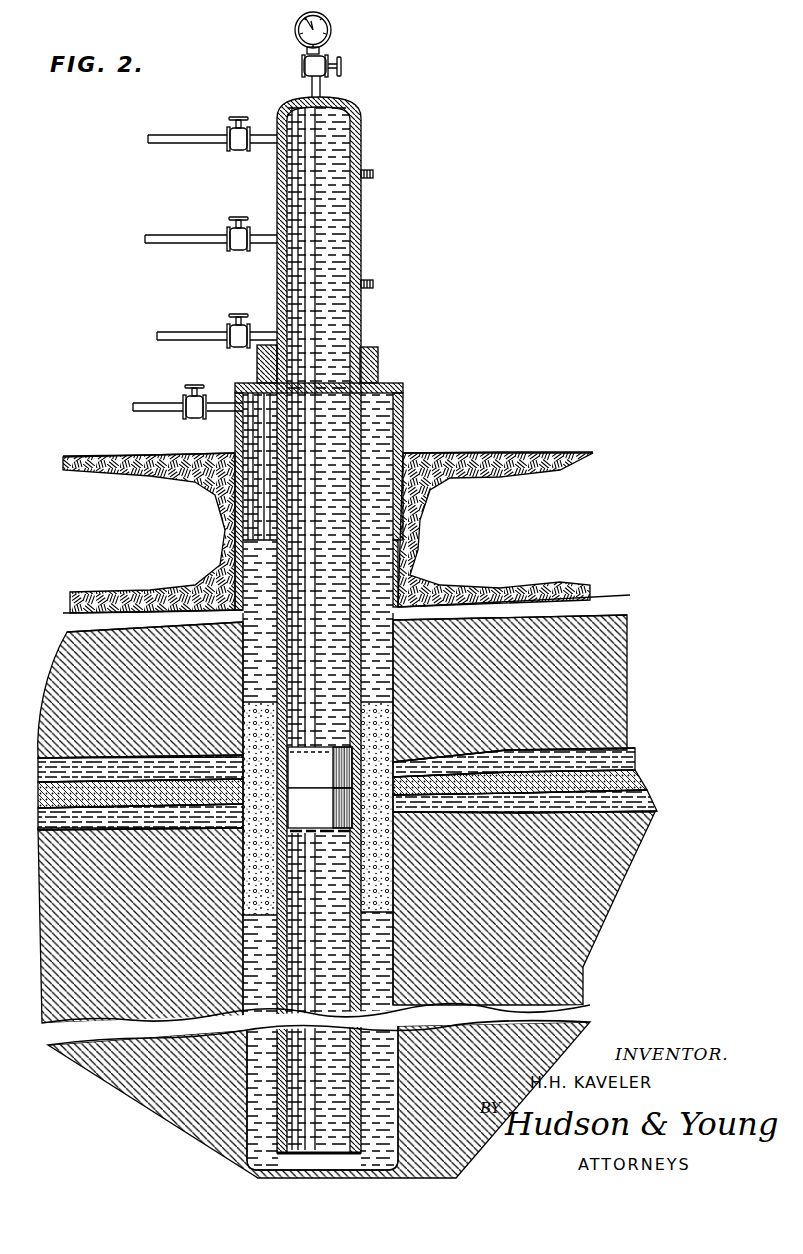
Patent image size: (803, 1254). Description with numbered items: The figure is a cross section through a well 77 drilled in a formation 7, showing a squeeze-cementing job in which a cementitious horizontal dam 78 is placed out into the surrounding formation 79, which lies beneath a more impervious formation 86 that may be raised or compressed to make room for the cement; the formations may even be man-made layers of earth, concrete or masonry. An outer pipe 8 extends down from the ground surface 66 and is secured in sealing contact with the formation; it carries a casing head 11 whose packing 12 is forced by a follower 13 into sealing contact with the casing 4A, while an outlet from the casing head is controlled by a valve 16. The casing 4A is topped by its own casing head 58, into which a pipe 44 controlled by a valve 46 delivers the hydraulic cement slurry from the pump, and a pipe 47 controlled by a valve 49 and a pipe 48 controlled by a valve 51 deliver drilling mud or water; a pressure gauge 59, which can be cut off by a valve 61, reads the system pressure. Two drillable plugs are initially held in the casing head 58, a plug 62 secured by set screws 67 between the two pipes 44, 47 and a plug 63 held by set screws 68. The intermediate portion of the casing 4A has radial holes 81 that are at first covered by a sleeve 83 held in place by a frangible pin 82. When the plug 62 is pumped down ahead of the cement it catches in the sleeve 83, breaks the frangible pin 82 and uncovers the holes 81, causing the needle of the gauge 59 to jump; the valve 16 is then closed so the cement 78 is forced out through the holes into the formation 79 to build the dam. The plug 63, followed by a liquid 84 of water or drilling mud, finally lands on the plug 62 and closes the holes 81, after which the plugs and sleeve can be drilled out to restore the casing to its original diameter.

The casing 4A is at (395, 957).
The formation 7 is at (583, 967).
The pipe 8 is at (400, 414).
The casing head 11 is at (383, 380).
The packing 12 is at (258, 365).
The follower 13 is at (366, 350).
The valve 16 is at (190, 402).
The pipe 44 is at (263, 237).
The valve 46 is at (228, 233).
The pipe 47 is at (263, 334).
The pipe 48 is at (262, 137).
The valve 49 is at (229, 328).
The valve 51 is at (228, 134).
The casing head 58 is at (361, 158).
The pressure gauge 59 is at (331, 34).
The valve 61 is at (341, 66).
The plug 62 is at (320, 809).
The plug 63 is at (320, 767).
The ground surface 66 is at (514, 455).
The set screws 67 is at (373, 284).
The set screws 68 is at (373, 176).
The well 77 is at (400, 567).
The cementitious horizontal dam 78 is at (637, 773).
The formation 79 is at (617, 752).
The radial holes 81 is at (360, 773).
The frangible pin 82 is at (395, 814).
The sleeve 83 is at (395, 850).
The liquid 84 is at (368, 448).
The formation 86 is at (332, 819).